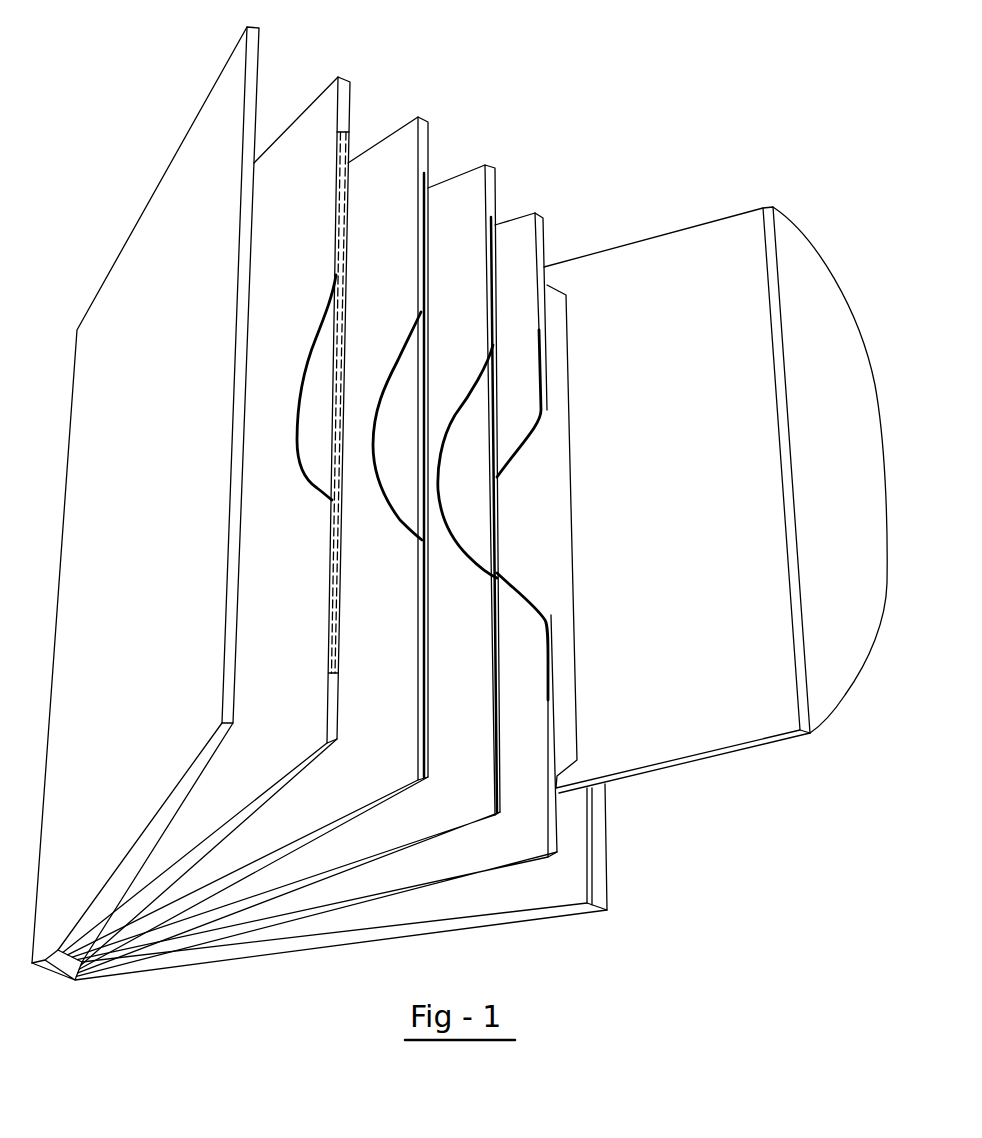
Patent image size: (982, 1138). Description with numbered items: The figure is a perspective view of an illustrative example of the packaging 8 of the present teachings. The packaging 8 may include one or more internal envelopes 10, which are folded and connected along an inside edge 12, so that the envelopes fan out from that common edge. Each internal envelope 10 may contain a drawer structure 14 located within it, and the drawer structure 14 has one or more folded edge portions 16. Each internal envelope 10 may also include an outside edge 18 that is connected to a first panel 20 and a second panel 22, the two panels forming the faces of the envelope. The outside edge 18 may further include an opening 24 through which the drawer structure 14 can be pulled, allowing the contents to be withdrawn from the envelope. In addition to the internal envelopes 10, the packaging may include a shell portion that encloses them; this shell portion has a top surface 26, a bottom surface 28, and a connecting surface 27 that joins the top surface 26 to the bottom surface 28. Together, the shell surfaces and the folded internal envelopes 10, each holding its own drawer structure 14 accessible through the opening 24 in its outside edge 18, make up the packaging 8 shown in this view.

The packaging 8 is at (819, 222).
The internal envelope 10 is at (430, 130).
The inside edge 12 is at (63, 450).
The drawer structure 14 is at (696, 499).
The folded edge portion 16 is at (877, 407).
The outside edge 18 is at (436, 135).
The first panel 20 is at (513, 242).
The second panel 22 is at (502, 181).
The opening 24 is at (570, 513).
The top surface 26 is at (163, 172).
The connecting surface 27 is at (56, 975).
The bottom surface 28 is at (620, 843).